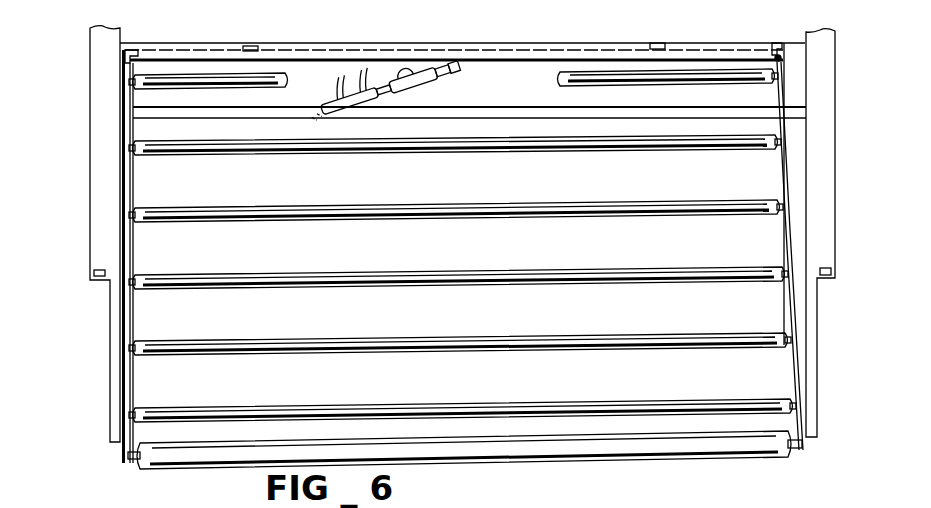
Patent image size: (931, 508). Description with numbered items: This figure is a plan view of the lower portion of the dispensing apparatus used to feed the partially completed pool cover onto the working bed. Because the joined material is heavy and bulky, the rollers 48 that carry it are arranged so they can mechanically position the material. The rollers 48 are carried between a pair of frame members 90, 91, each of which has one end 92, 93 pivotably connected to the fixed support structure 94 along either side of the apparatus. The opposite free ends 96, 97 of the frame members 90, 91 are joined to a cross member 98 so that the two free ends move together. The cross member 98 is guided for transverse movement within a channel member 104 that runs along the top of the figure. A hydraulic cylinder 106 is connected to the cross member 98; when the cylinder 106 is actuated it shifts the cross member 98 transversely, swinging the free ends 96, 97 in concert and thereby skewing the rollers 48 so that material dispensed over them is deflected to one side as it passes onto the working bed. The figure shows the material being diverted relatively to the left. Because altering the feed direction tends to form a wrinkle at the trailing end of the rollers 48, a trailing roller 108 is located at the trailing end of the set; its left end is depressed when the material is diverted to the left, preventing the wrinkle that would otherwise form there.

The rollers 48 is at (455, 153).
The frame member 90 is at (126, 326).
The frame member 91 is at (797, 337).
The end of frame member 92 is at (128, 448).
The end of frame member 93 is at (802, 446).
The support structure 94 is at (118, 380).
The free end of frame member 96 is at (127, 82).
The free end of frame member 97 is at (784, 64).
The cross member 98 is at (545, 60).
The channel member 104 is at (512, 38).
The hydraulic cylinder 106 is at (407, 86).
The trailing roller 108 is at (582, 452).